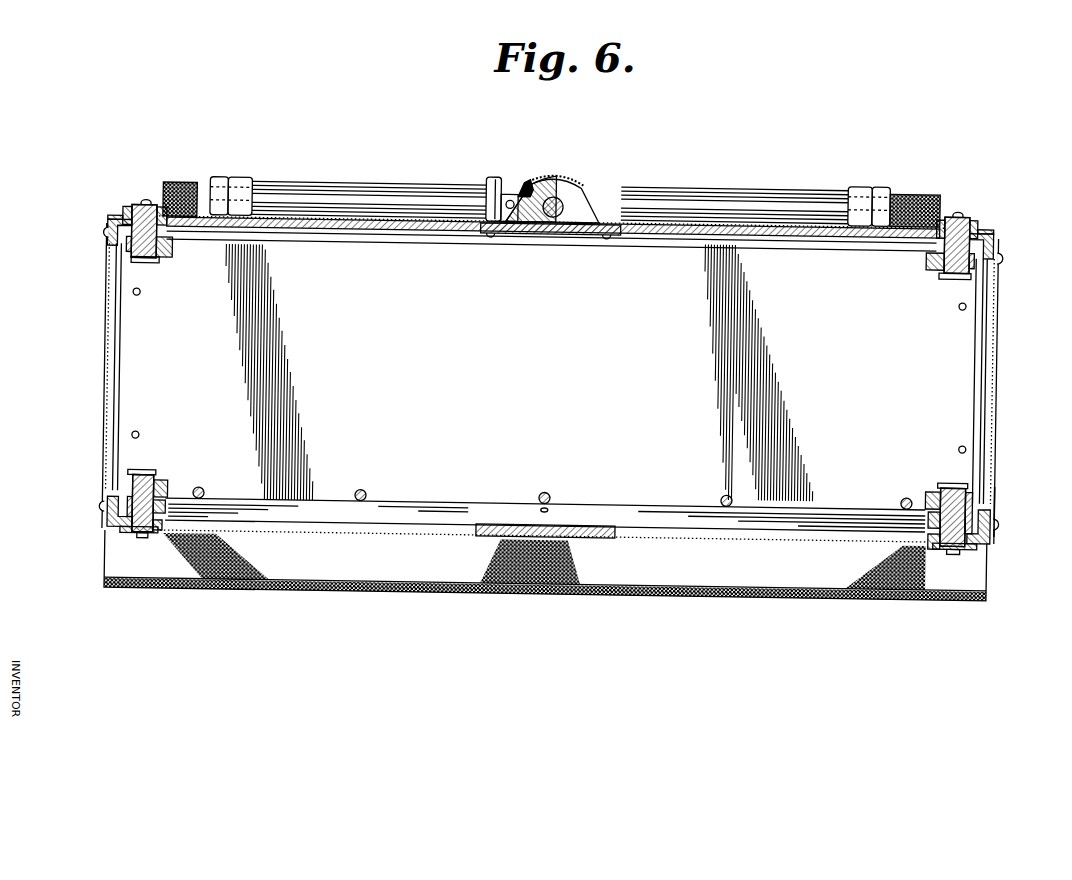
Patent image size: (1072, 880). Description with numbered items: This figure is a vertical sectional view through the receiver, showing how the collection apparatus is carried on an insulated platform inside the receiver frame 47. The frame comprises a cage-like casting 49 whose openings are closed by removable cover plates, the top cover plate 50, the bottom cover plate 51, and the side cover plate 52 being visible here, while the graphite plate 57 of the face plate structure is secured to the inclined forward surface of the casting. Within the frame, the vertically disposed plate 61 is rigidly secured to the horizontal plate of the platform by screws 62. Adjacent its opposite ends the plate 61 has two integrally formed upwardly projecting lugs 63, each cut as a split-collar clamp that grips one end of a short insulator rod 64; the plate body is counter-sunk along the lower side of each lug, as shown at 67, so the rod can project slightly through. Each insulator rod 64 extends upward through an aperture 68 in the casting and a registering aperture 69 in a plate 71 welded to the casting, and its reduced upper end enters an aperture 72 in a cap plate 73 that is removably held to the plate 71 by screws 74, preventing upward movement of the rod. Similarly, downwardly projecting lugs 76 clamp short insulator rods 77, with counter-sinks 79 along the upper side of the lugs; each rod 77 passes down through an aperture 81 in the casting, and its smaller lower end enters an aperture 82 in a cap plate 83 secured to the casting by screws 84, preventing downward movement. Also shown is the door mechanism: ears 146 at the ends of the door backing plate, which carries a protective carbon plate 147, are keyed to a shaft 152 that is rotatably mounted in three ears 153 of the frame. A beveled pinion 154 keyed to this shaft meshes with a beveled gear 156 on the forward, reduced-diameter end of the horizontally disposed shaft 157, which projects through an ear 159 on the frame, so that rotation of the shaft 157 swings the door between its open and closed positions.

The receiver frame 47 is at (1008, 259).
The cage-like casting 49 is at (998, 496).
The cover plate 50 is at (408, 222).
The cover plate 51 is at (318, 537).
The cover plate 52 is at (104, 355).
The graphite plate 57 is at (545, 586).
The vertically disposed plate 61 is at (559, 375).
The screws 62 is at (206, 495).
The upwardly projecting lug 63 is at (169, 262).
The insulator rod 64 is at (148, 268).
The counter-sunk portion 67 is at (126, 258).
The aperture 68 is at (104, 229).
The aperture 69 is at (115, 222).
The plate 71 is at (176, 210).
The aperture 72 is at (124, 213).
The cap plate 73 is at (158, 213).
The screws 74 is at (144, 206).
The downwardly projecting lug 76 is at (166, 486).
The insulator rod 77 is at (146, 480).
The counter-sunk portion 79 is at (135, 477).
The aperture 81 is at (118, 530).
The aperture 82 is at (128, 540).
The cap plate 83 is at (160, 537).
The screws 84 is at (146, 545).
The ears 146 is at (236, 182).
The carbon plate 147 is at (676, 192).
The shaft 152 is at (337, 196).
The ears 153 is at (215, 182).
The beveled pinion 154 is at (519, 180).
The beveled gear 156 is at (556, 178).
The shaft 157 is at (549, 236).
The ear 159 is at (578, 203).